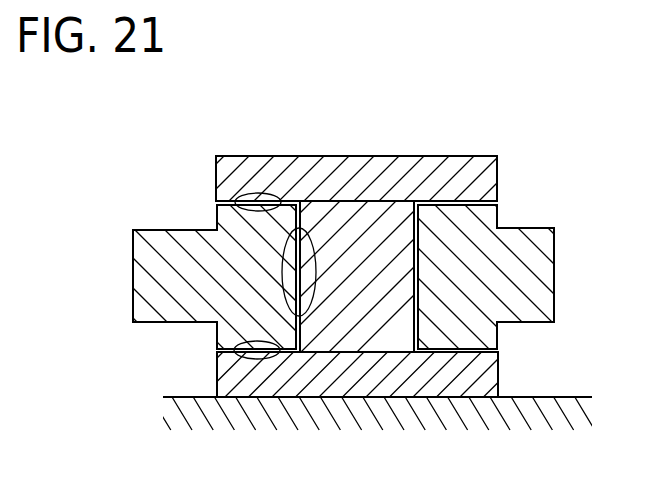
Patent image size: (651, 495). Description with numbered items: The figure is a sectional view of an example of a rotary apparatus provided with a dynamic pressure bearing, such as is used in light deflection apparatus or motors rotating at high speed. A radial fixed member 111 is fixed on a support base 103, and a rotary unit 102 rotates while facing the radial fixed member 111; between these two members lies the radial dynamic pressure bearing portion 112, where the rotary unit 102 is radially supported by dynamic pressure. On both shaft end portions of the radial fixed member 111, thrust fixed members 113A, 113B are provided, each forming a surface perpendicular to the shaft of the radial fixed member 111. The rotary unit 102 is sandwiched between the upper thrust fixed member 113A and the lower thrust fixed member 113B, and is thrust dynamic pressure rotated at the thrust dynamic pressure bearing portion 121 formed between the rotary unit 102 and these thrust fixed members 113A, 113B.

The rotary unit 102 is at (540, 268).
The support base 103 is at (517, 417).
The radial fixed member 111 is at (350, 306).
The radial dynamic pressure bearing portion 112 is at (310, 268).
The thrust fixed member 113A is at (493, 178).
The thrust fixed member 113B is at (490, 371).
The thrust dynamic pressure bearing portion 121 is at (240, 186).